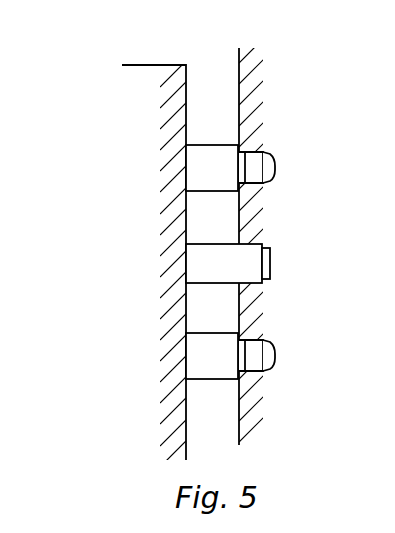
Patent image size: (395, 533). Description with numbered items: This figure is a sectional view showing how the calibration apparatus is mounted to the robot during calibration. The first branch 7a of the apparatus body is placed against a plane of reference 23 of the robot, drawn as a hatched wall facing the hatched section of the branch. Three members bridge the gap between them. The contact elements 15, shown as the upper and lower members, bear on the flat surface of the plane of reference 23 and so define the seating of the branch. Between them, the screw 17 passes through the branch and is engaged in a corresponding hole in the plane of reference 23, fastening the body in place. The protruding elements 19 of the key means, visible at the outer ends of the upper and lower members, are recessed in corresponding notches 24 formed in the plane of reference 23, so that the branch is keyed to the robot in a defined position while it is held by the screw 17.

The first branch 7a is at (155, 65).
The plane of reference 23 is at (249, 102).
The contact elements 15 is at (197, 358).
The screw 17 is at (247, 260).
The protruding elements 19 is at (262, 151).
The notches 24 is at (276, 168).